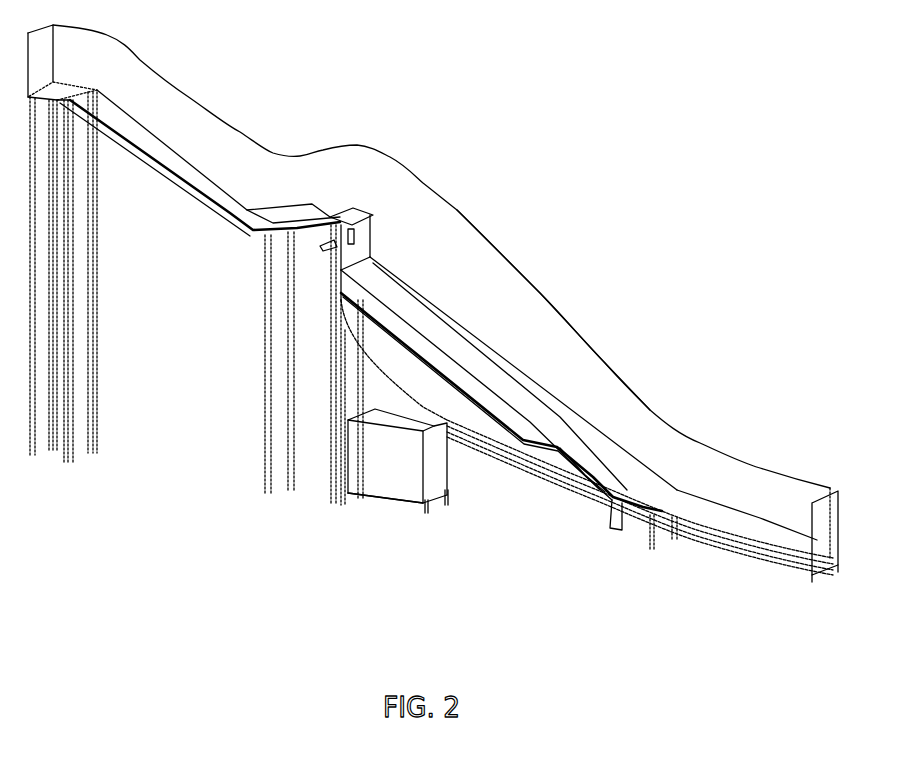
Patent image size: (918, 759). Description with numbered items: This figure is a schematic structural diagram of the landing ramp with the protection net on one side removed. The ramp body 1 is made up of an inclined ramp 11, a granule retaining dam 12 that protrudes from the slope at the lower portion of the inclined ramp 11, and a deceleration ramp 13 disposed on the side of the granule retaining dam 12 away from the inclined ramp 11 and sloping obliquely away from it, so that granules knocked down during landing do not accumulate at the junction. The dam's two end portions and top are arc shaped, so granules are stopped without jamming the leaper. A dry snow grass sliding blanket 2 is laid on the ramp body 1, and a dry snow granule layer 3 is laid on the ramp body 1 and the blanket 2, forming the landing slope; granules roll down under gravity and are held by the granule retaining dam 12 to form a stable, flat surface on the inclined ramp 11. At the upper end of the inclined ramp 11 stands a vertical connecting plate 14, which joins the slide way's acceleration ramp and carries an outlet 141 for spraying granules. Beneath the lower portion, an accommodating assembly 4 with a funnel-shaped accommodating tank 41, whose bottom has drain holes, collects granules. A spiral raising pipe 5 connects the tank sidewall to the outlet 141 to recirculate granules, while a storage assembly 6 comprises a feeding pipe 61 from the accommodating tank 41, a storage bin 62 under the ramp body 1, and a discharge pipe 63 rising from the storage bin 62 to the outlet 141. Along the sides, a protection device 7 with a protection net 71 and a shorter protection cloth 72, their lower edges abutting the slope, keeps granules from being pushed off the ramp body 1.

The ramp body 1 is at (737, 564).
The inclined ramp 11 is at (523, 373).
The granule retaining dam 12 is at (593, 447).
The deceleration ramp 13 is at (587, 444).
The connecting plate 14 is at (366, 225).
The outlet 141 is at (385, 223).
The dry snow grass sliding blanket 2 is at (501, 402).
The dry snow granule layer 3 is at (510, 373).
The accommodating assembly 4 is at (561, 561).
The accommodating tank 41 is at (645, 554).
The raising pipe 5 is at (465, 388).
The storage assembly 6 is at (395, 503).
The feeding pipe 61 is at (472, 474).
The storage bin 62 is at (377, 519).
The discharge pipe 63 is at (310, 418).
The protection device 7 is at (723, 410).
The protection net 71 is at (663, 417).
The protection cloth 72 is at (747, 496).